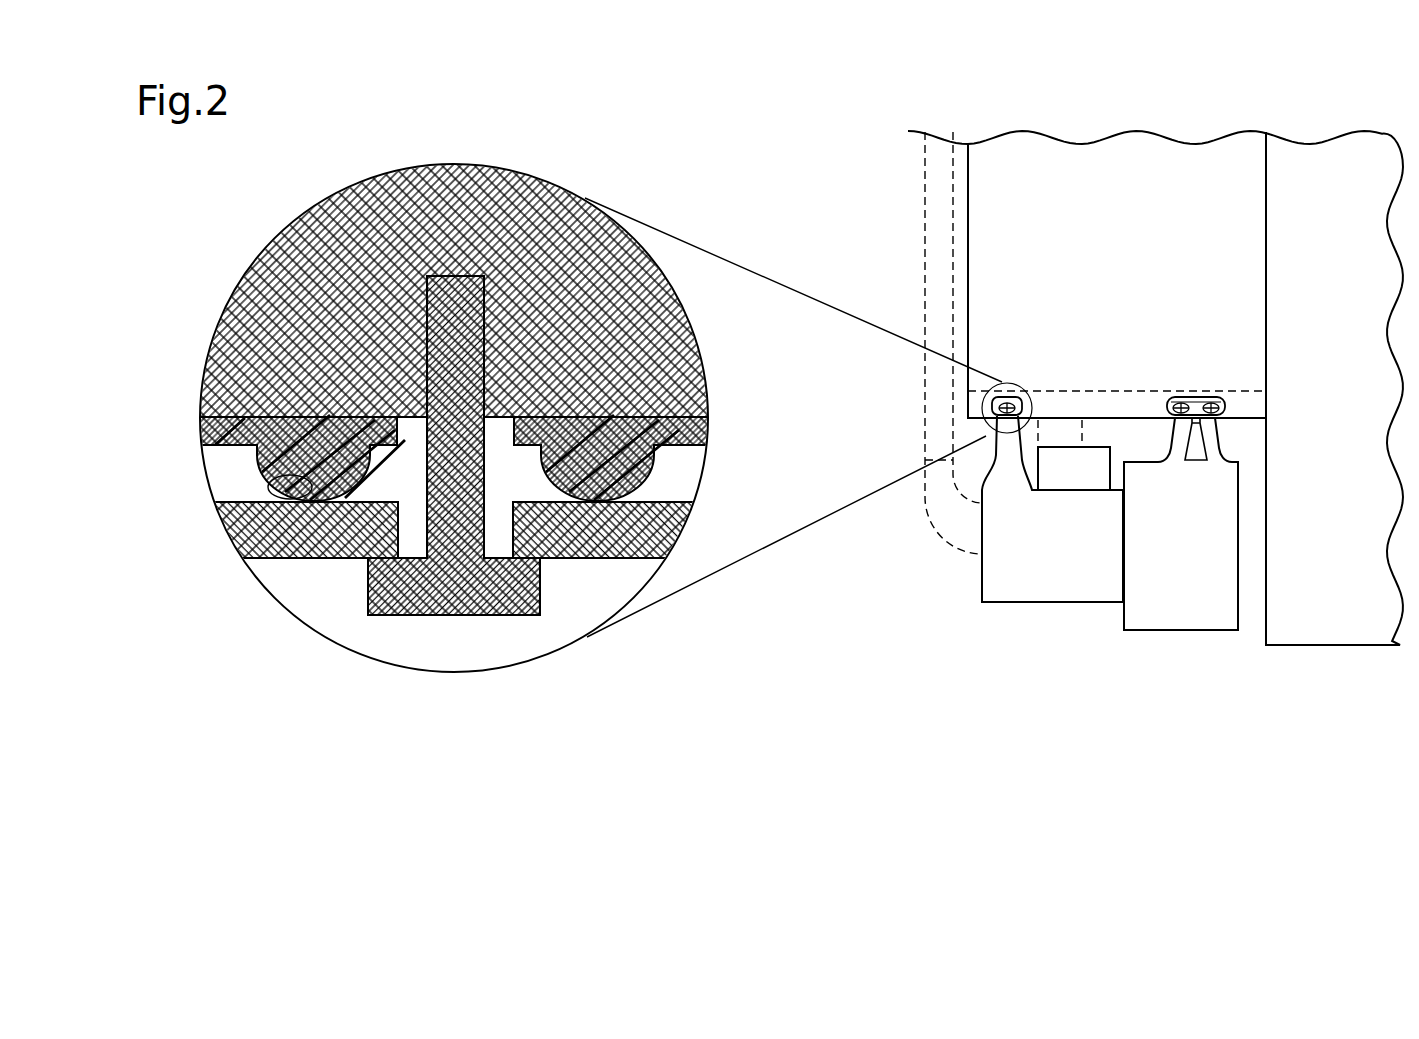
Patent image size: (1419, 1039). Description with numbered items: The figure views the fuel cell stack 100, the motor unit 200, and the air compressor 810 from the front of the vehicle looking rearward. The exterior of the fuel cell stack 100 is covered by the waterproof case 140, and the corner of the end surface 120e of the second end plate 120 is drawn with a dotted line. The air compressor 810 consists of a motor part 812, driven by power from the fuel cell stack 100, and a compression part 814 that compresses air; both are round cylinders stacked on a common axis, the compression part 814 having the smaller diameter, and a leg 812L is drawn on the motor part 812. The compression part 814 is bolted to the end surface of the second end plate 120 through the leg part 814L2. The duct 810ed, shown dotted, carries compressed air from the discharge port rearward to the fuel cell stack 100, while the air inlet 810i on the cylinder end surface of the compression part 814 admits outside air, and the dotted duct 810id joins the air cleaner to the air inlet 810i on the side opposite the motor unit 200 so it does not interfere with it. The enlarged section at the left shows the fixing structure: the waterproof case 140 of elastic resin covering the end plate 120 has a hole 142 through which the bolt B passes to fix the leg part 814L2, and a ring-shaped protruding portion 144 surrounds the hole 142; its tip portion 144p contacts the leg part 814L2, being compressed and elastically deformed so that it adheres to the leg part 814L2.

The second end plate 120 is at (242, 319).
The waterproof case 140 is at (228, 430).
The fuel cell stack 100 is at (988, 202).
The protruding portion 144 is at (256, 464).
The tip portion 144p is at (272, 479).
The hole 142 is at (380, 496).
The leg part 814L2 is at (575, 559).
The bolt B is at (408, 616).
The motor unit 200 is at (1321, 624).
The end surface 120e is at (1130, 405).
The duct 810id is at (1017, 298).
The duct 810ed is at (1060, 430).
The air inlet 810i is at (982, 530).
The compression part 814 is at (1060, 582).
The motor part 812 is at (1188, 602).
The leg of second holding block 812L is at (1210, 440).
The air compressor 810 is at (1180, 722).